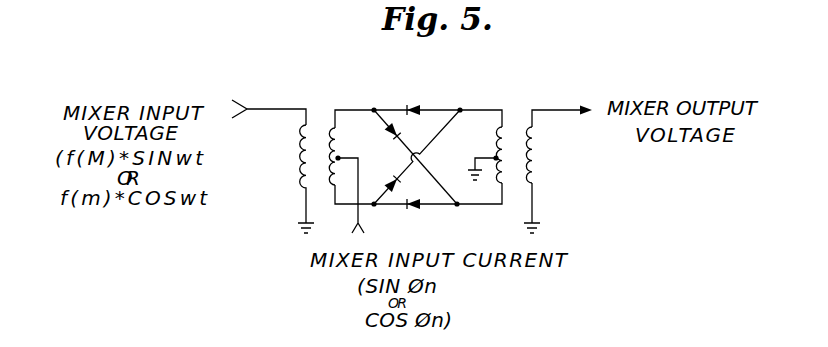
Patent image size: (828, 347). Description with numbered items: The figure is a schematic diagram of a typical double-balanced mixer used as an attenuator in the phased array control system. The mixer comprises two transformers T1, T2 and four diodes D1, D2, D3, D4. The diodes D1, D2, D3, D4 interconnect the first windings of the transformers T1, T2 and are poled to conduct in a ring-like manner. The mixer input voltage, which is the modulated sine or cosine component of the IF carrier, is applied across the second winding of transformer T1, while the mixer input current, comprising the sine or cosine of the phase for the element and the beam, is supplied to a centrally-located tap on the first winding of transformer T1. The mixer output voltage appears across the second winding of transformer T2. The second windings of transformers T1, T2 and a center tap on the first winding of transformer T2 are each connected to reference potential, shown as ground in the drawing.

The transformer T1 is at (318, 111).
The transformer T2 is at (517, 111).
The diode D1 is at (416, 99).
The diode D2 is at (410, 133).
The diode D3 is at (421, 195).
The diode D4 is at (386, 174).